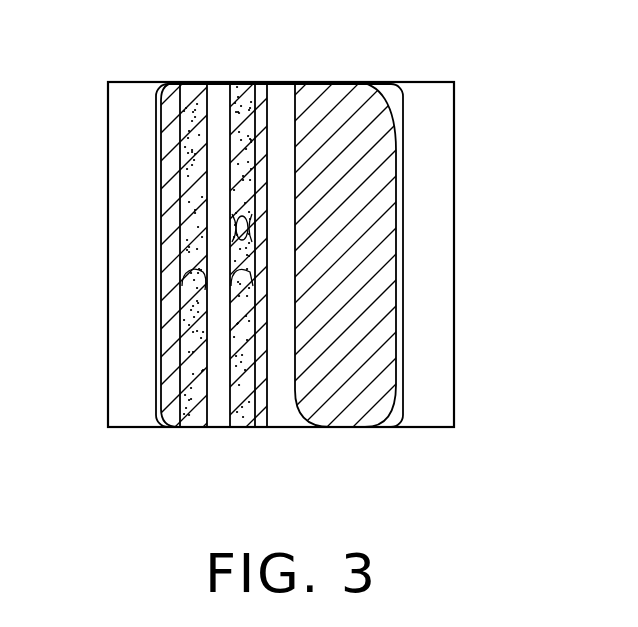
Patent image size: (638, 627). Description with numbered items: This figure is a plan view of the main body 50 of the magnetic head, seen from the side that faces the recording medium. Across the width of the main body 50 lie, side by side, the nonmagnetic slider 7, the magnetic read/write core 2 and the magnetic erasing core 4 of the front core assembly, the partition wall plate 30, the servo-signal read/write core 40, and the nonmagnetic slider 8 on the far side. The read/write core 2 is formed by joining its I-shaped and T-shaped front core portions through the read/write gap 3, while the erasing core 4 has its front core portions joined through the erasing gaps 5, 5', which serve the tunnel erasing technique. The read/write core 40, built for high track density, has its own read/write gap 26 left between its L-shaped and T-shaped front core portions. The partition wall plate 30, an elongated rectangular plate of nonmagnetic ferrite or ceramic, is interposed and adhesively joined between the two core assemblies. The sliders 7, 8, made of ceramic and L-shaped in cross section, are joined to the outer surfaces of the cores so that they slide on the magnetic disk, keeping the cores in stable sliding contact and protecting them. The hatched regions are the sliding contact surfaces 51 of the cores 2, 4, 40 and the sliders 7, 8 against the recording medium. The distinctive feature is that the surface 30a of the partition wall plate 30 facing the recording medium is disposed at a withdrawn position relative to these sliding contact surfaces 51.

The magnetic read/write core 2 is at (245, 420).
The read/write gap 3 is at (232, 302).
The magnetic erasing core 4 is at (266, 168).
The erasing gap 5 is at (154, 240).
The erasing gap 5' is at (157, 214).
The nonmagnetic slider 7 is at (118, 315).
The nonmagnetic slider 8 is at (437, 208).
The read/write gap 26 is at (183, 283).
The partition wall plate 30 is at (213, 100).
The surface of the partition wall plate 30a is at (268, 118).
The read/write core 40 is at (186, 92).
The main body 50 is at (419, 433).
The sliding contact surfaces 51 is at (160, 143).